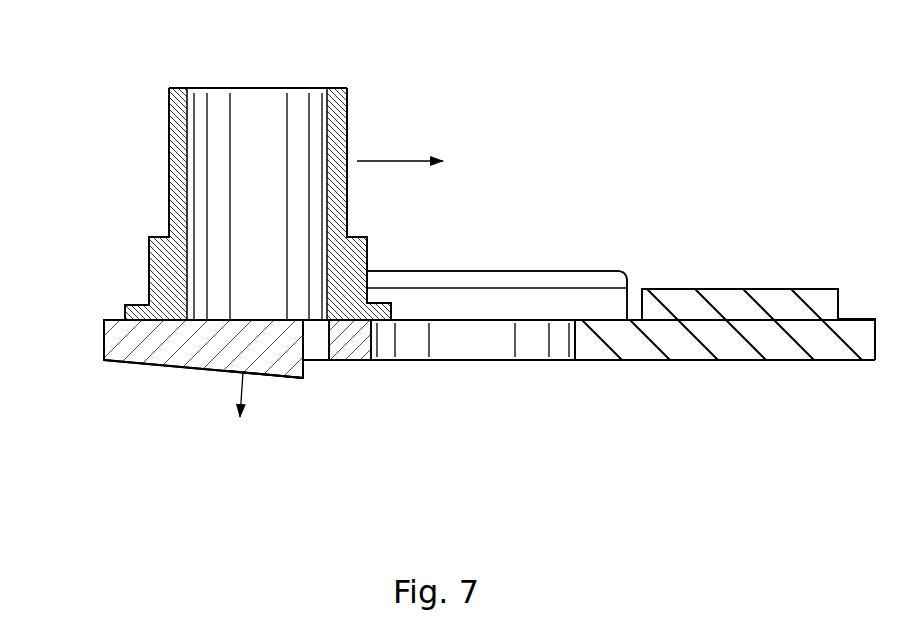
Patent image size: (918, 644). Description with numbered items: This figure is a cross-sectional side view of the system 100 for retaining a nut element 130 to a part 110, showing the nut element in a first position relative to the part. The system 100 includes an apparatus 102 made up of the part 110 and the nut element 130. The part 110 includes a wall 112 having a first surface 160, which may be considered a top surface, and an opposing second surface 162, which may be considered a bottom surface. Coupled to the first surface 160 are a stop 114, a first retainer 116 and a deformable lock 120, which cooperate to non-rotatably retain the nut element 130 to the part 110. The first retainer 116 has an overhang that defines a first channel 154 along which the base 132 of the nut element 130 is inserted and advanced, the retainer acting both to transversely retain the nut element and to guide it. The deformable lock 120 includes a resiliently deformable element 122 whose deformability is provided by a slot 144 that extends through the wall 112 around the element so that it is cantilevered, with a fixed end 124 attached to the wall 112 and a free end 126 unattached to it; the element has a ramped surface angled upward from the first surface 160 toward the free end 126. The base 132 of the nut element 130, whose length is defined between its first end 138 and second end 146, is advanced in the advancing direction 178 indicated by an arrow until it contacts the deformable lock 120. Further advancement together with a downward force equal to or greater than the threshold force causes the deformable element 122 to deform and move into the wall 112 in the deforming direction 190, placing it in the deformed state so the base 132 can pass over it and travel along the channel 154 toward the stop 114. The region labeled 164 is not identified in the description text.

The system 100 is at (575, 107).
The apparatus 102 is at (447, 200).
The part 110 is at (755, 288).
The wall 112 is at (113, 352).
The stop 114 is at (692, 288).
The first retainer 116 is at (504, 271).
The deformable lock 120 is at (296, 380).
The deformable element 122 is at (267, 372).
The fixed end 124 is at (178, 352).
The free end 126 is at (305, 345).
The nut element 130 is at (168, 160).
The base 132 is at (103, 318).
The first end 138 is at (120, 318).
The slot 144 is at (329, 350).
The second end 146 is at (393, 310).
The first channel 154 is at (571, 305).
The first surface 160 is at (113, 318).
The second surface 162 is at (122, 360).
The base plate 164 is at (573, 352).
The advancing direction 178 is at (392, 160).
The deforming direction 190 is at (240, 385).